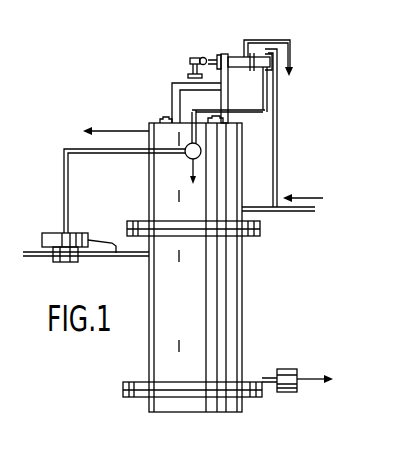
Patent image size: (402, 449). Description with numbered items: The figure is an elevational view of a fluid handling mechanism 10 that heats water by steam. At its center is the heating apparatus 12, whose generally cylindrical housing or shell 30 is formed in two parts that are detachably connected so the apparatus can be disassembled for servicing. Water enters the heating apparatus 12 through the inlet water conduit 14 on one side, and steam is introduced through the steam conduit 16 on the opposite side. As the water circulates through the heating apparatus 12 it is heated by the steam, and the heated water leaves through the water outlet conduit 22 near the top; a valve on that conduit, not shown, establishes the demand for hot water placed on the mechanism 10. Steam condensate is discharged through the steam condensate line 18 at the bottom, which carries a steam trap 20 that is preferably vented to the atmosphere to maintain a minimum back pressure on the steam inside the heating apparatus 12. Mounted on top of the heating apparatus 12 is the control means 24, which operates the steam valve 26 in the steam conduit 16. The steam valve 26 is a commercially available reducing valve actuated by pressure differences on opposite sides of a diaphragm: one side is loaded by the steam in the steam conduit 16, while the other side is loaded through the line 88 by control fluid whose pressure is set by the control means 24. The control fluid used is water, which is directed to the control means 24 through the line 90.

The fluid handling mechanism 10 is at (150, 96).
The heating apparatus 12 is at (242, 172).
The inlet water conduit 14 is at (292, 210).
The steam conduit 16 is at (135, 257).
The steam condensate line 18 is at (268, 378).
The steam trap 20 is at (283, 367).
The water outlet conduit 22 is at (110, 131).
The control means 24 is at (237, 44).
The steam valve 26 is at (36, 237).
The housing or shell 30 is at (245, 273).
The line 88 is at (261, 86).
The line 90 is at (278, 150).